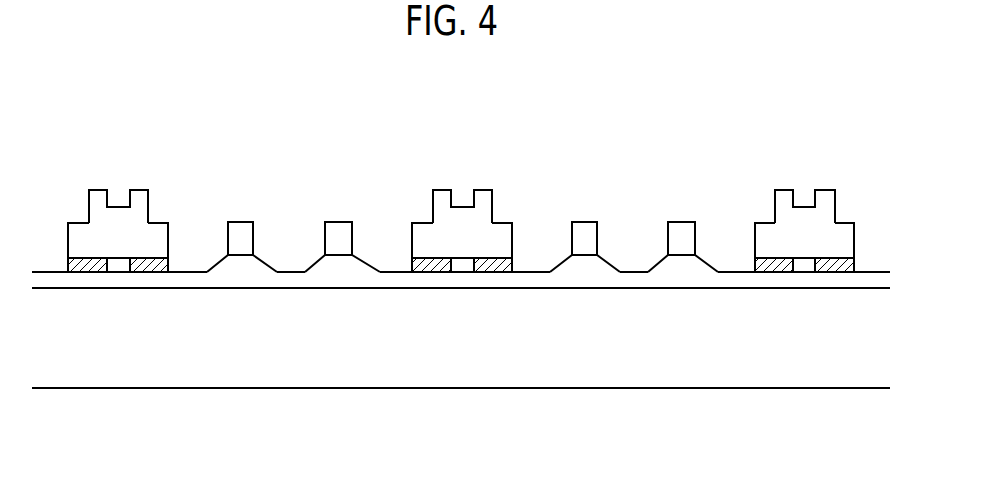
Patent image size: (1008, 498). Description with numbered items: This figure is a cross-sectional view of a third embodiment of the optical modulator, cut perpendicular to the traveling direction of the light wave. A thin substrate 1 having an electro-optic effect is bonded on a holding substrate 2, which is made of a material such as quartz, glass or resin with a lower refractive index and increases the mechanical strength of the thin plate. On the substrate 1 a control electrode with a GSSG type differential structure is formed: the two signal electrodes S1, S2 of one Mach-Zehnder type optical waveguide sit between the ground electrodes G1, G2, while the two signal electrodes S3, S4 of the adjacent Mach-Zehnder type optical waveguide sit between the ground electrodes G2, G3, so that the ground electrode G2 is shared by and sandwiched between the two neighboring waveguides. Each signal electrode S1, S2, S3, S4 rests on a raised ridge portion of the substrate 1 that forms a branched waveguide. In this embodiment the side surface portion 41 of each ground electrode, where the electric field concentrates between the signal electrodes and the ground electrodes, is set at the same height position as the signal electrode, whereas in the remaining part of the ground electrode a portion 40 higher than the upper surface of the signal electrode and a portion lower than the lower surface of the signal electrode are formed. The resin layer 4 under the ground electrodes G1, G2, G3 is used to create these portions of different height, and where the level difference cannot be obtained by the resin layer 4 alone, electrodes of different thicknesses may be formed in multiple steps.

The substrate 1 is at (190, 280).
The holding substrate 2 is at (480, 353).
The resin layer 4 is at (90, 262).
The ground electrode portion higher than the signal electrode 40 is at (87, 190).
The side surface portion of the ground electrode 41 is at (167, 222).
The ground electrode G1 is at (142, 182).
The ground electrode G2 is at (482, 183).
The ground electrode G3 is at (828, 182).
The signal electrode S1 is at (242, 226).
The signal electrode S2 is at (342, 226).
The signal electrode S3 is at (585, 226).
The signal electrode S4 is at (683, 226).